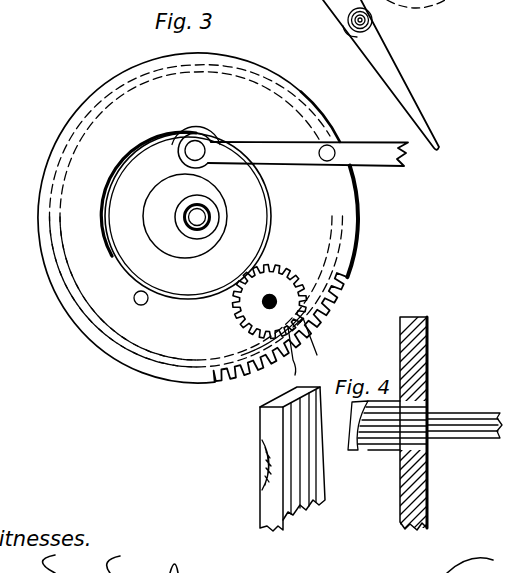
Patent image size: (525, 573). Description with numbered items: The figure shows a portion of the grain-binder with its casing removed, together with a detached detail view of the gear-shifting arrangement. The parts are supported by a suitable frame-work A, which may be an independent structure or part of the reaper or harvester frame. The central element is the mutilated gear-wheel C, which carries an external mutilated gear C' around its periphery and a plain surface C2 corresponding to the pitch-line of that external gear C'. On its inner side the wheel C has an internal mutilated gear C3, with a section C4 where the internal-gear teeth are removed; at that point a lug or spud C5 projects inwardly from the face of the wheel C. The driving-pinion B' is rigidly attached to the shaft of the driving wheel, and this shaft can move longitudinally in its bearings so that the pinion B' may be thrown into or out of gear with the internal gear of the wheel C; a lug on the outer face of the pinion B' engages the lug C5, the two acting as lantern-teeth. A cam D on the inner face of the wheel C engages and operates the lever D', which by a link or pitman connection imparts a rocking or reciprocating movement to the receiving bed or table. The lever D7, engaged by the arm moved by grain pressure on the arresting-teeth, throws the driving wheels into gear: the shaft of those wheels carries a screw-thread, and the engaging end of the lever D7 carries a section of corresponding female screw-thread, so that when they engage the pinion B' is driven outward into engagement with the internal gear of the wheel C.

In FIG. 3, the mutilated gear-wheel C is at (198, 218).
In FIG. 3, the external mutilated gear C' is at (286, 327).
In FIG. 3, the plain surface C2 is at (200, 201).
In FIG. 3, the internal mutilated gear C3 is at (245, 352).
In FIG. 3, the section where internal-gear teeth are removed C4 is at (315, 343).
In FIG. 3, the lug or spud C5 is at (296, 352).
In FIG. 3, the cam D is at (186, 218).
In FIG. 3, the lever D' is at (290, 147).
In FIG. 3, the lever D7 is at (384, 75).
In FIG. 4, the lever D7 is at (292, 463).
In FIG. 3, the driving-pinion B' is at (270, 302).
In FIG. 4, the frame-work A is at (413, 424).